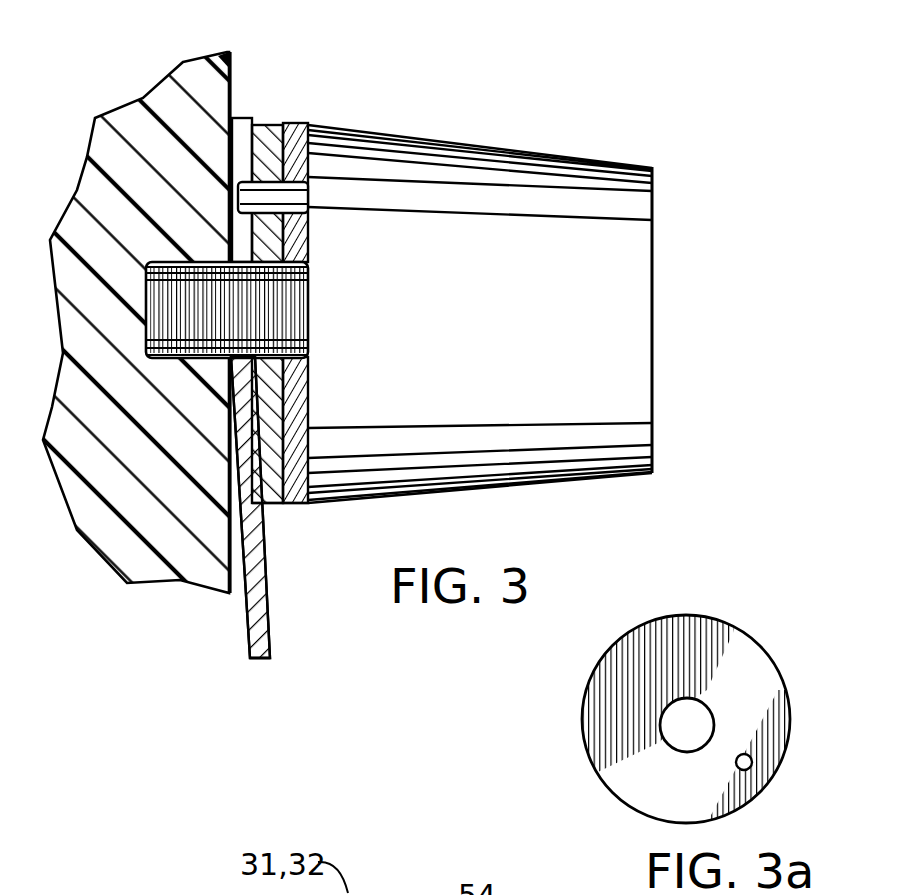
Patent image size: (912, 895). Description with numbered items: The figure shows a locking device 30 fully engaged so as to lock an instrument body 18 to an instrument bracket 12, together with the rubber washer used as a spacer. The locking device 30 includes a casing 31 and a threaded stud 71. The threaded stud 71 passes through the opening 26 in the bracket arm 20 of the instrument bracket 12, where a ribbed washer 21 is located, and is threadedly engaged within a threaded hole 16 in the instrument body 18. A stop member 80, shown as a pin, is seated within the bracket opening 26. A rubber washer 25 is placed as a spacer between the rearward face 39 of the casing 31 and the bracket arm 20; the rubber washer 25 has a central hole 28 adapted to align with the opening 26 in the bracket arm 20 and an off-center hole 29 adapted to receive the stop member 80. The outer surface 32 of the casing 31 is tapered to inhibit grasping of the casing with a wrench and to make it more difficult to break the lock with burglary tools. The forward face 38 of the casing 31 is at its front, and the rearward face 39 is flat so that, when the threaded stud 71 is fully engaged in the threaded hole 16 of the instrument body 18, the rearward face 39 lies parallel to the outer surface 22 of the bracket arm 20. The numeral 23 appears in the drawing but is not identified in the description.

In FIG. 3, the threaded hole 16 is at (157, 247).
In FIG. 3, the instrument body 18 is at (230, 77).
In FIG. 3, the bracket opening 26 is at (240, 118).
In FIG. 3, the ribbed washer 21 is at (262, 122).
In FIG. 3, the stop member 80 is at (300, 122).
In FIG. 3, the casing 31 is at (470, 143).
In FIG. 3, the outer surface of the casing 32 is at (480, 314).
In FIG. 3, the locking device 30 is at (632, 138).
In FIG. 3, the threaded stud 71 is at (147, 337).
In FIG. 3, the forward face of the casing 38 is at (655, 437).
In FIG. 3, the rubber washer 25 is at (296, 503).
In FIG. 3a, the rubber washer 25 is at (727, 621).
In FIG. 3, the rearward face of the casing 39 is at (267, 503).
In FIG. 3, the bracket arm 20 is at (268, 603).
In FIG. 3, the instrument bracket 12 is at (250, 507).
In FIG. 3, the outer surface of the bracket arm 22 is at (275, 641).
In FIG. 3, the tab 23 is at (248, 632).
In FIG. 3a, the central hole 28 is at (672, 750).
In FIG. 3a, the off-center hole 29 is at (753, 762).